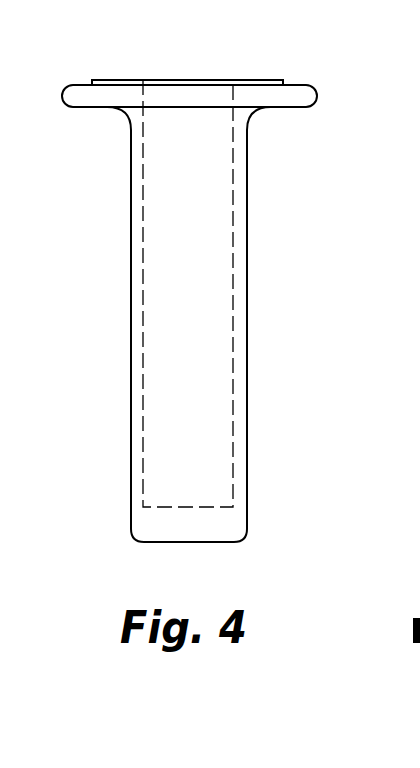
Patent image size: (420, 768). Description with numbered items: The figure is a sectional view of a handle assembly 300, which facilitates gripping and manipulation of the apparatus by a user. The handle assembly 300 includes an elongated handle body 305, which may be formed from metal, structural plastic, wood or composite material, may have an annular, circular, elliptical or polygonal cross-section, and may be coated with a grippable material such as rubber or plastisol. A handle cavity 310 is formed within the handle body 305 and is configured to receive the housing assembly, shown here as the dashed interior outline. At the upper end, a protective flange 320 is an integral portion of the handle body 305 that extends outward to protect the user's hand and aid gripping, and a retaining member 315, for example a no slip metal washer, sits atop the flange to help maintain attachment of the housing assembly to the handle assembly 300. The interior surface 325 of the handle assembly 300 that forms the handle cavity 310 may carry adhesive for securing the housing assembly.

The handle assembly 300 is at (184, 278).
The handle body 305 is at (247, 167).
The handle cavity 310 is at (157, 236).
The retaining member 315 is at (262, 80).
The protective flange 320 is at (71, 100).
The interior surface 325 is at (240, 356).